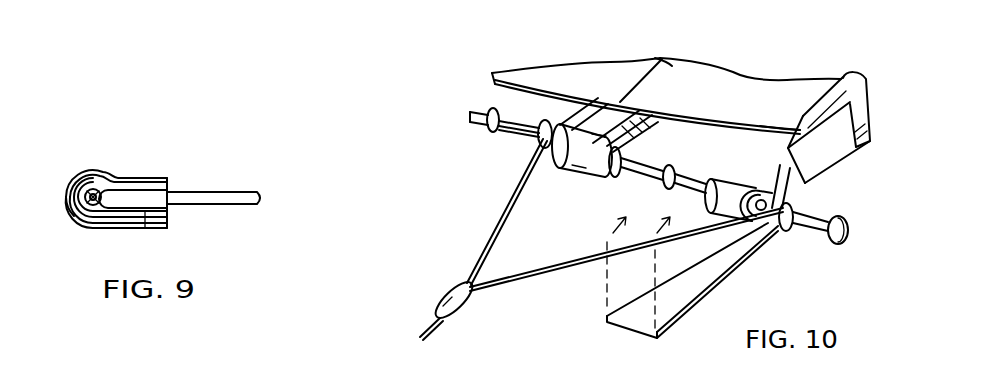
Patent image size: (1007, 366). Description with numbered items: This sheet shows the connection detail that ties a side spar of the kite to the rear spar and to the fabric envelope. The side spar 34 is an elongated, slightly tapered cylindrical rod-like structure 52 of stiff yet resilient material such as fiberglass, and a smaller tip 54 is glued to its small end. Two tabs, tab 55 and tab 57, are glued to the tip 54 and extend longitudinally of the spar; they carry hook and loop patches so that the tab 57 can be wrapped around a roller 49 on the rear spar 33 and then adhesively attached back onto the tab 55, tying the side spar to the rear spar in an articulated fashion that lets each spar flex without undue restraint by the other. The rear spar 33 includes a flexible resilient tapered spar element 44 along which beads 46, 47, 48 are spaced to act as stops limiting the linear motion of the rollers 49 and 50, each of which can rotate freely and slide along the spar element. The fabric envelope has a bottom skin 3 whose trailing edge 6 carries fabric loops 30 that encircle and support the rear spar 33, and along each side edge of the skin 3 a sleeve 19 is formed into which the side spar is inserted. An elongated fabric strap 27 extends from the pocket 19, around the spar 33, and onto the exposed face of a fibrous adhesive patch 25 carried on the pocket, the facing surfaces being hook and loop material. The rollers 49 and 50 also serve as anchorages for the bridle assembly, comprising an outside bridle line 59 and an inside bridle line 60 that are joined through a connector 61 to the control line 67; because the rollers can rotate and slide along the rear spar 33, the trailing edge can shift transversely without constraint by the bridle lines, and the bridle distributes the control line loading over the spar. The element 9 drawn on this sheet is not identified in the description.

In FIG. 10, the bottom skin 3 is at (742, 109).
In FIG. 10, the trailing edge 6 is at (502, 82).
In FIG. 10, the panel hem 9 is at (670, 68).
In FIG. 10, the sleeve 19 is at (838, 151).
In FIG. 10, the fibrous adhesive patch 25 is at (857, 73).
In FIG. 10, the fabric strap 27 is at (688, 310).
In FIG. 10, the fabric loop 30 is at (640, 143).
In FIG. 10, the rear spar 33 is at (472, 121).
In FIG. 10, the side spar 34 is at (767, 135).
In FIG. 9, the tapered spar element 44 is at (78, 219).
In FIG. 10, the bead 46 is at (833, 243).
In FIG. 10, the bead 47 is at (646, 189).
In FIG. 10, the bead 48 is at (492, 137).
In FIG. 9, the roller 49 is at (84, 170).
In FIG. 10, the roller 49 is at (767, 229).
In FIG. 10, the roller 50 is at (555, 130).
In FIG. 9, the rod-like structure 52 is at (234, 190).
In FIG. 9, the tip 54 is at (170, 182).
In FIG. 9, the tab 55 is at (144, 211).
In FIG. 9, the tab 57 is at (100, 169).
In FIG. 10, the tab 57 is at (796, 191).
In FIG. 10, the outside bridle line 59 is at (518, 282).
In FIG. 10, the inside bridle line 60 is at (513, 194).
In FIG. 10, the connector 61 is at (458, 312).
In FIG. 10, the control line 67 is at (422, 329).